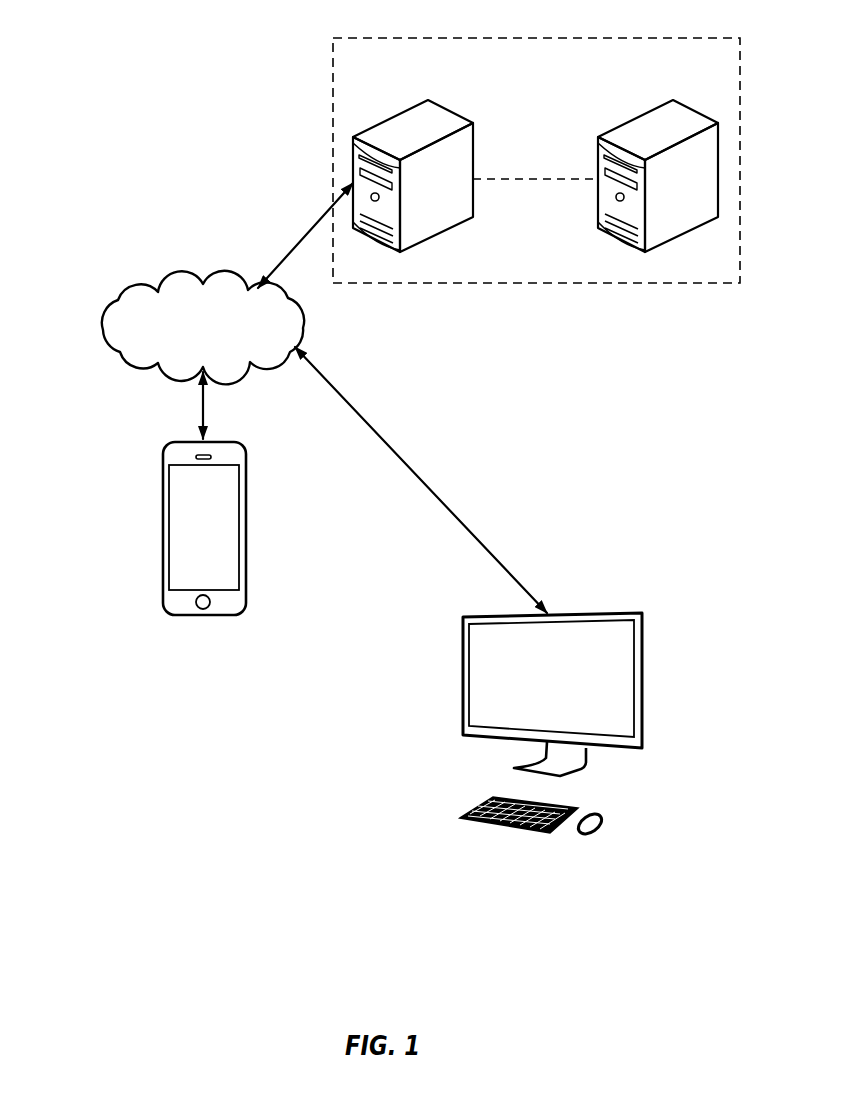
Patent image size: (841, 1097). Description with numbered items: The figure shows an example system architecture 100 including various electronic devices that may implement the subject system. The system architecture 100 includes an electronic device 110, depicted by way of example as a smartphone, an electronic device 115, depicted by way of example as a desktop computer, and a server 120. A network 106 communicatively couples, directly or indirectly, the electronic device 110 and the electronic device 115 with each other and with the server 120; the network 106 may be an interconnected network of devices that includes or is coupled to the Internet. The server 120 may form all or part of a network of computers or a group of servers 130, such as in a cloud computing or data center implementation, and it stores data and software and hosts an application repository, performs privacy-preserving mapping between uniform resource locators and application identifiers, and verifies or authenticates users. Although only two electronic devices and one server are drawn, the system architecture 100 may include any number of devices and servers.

The system architecture 100 is at (110, 5).
The network 106 is at (203, 283).
The electronic device 110 is at (203, 616).
The electronic device 115 is at (546, 846).
The server 120 is at (391, 117).
The group of servers 130 is at (332, 76).